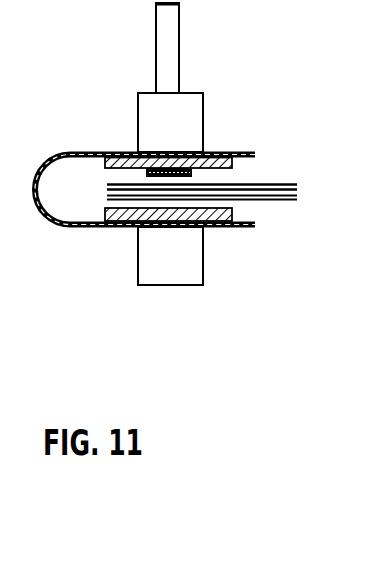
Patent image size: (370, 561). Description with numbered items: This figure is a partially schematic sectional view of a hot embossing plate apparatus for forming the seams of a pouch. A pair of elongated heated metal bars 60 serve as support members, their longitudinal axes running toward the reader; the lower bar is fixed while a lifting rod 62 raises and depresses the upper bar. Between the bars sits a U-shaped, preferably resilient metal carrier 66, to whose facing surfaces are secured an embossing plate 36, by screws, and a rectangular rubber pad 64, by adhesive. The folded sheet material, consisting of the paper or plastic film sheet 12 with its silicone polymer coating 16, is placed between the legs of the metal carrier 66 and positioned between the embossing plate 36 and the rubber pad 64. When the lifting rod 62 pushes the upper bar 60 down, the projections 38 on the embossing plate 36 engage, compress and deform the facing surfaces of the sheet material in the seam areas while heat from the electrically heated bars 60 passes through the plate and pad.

The paper sheet or plastic film sheet 12 is at (230, 192).
The silicone polymer coating 16 is at (272, 184).
The embossing plate 36 is at (219, 156).
The projections 38 is at (146, 173).
The heated metal bar 60 is at (181, 133).
The lifting rod 62 is at (163, 57).
The rubber pad 64 is at (125, 226).
The U-shaped metal member 66 is at (67, 151).